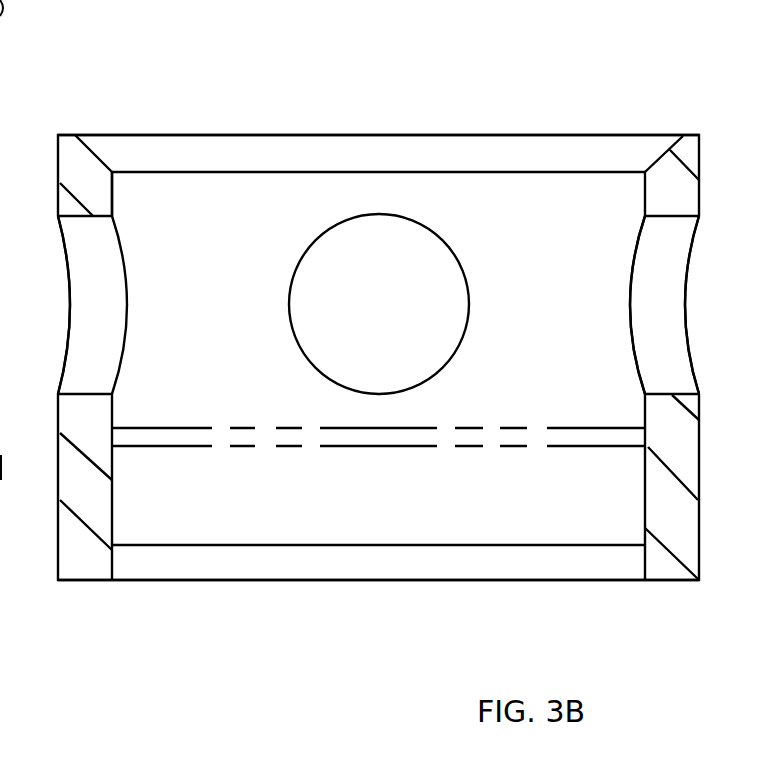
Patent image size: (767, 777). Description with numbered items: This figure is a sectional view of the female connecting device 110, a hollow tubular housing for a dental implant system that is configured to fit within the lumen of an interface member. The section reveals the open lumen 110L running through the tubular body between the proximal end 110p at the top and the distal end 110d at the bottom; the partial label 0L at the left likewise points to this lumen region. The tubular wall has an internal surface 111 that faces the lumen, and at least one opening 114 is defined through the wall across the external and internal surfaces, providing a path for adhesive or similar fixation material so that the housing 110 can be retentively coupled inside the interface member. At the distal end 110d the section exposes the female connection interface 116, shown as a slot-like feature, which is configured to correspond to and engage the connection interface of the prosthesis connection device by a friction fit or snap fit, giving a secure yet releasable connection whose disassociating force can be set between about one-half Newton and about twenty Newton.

The female connecting device 110 is at (7, 37).
The open lumen 110L is at (202, 223).
The left wall (partial numeral) 0L is at (183, 313).
The proximal end 110p is at (422, 97).
The distal end 110d is at (313, 602).
The internal surface 111 is at (638, 202).
The opening 114 is at (455, 308).
The female connection interface 116 is at (196, 500).